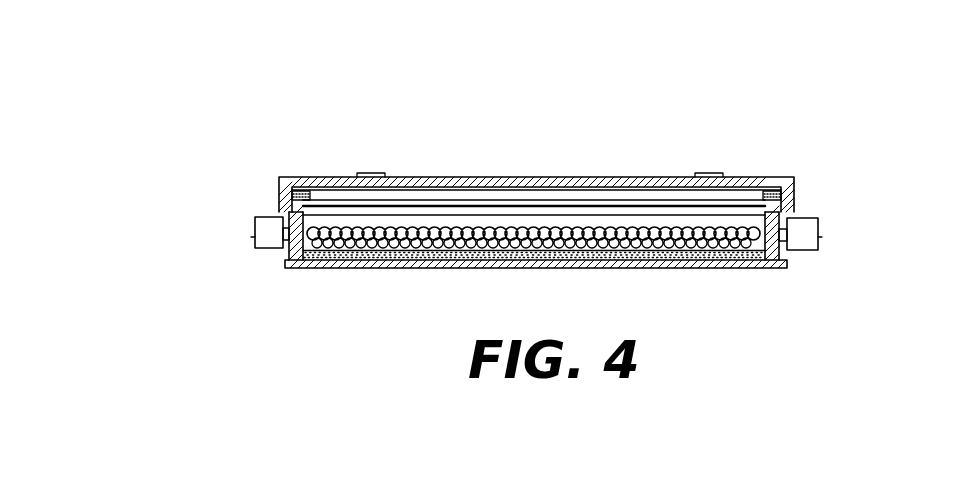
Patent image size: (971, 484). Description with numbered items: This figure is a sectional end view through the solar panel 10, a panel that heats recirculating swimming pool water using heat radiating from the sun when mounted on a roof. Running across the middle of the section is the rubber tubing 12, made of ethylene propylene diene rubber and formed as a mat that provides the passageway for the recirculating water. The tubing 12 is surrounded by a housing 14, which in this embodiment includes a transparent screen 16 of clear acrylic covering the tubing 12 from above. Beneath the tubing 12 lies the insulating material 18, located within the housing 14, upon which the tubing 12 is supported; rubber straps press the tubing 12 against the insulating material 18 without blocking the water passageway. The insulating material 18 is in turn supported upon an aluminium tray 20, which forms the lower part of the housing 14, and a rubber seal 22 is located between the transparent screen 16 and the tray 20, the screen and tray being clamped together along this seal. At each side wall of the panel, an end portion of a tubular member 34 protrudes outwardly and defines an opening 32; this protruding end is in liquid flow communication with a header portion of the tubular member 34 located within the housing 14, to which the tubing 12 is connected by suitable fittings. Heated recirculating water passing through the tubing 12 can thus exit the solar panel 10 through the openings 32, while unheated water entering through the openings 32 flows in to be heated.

The solar panel 10 is at (793, 153).
The rubber tubing 12 is at (433, 226).
The housing 14 is at (321, 267).
The transparent screen 16 is at (593, 178).
The insulating material 18 is at (702, 253).
The aluminium tray 20 is at (784, 270).
The rubber seal 22 is at (322, 188).
The opening 32 is at (255, 235).
The tubular member 34 is at (533, 218).